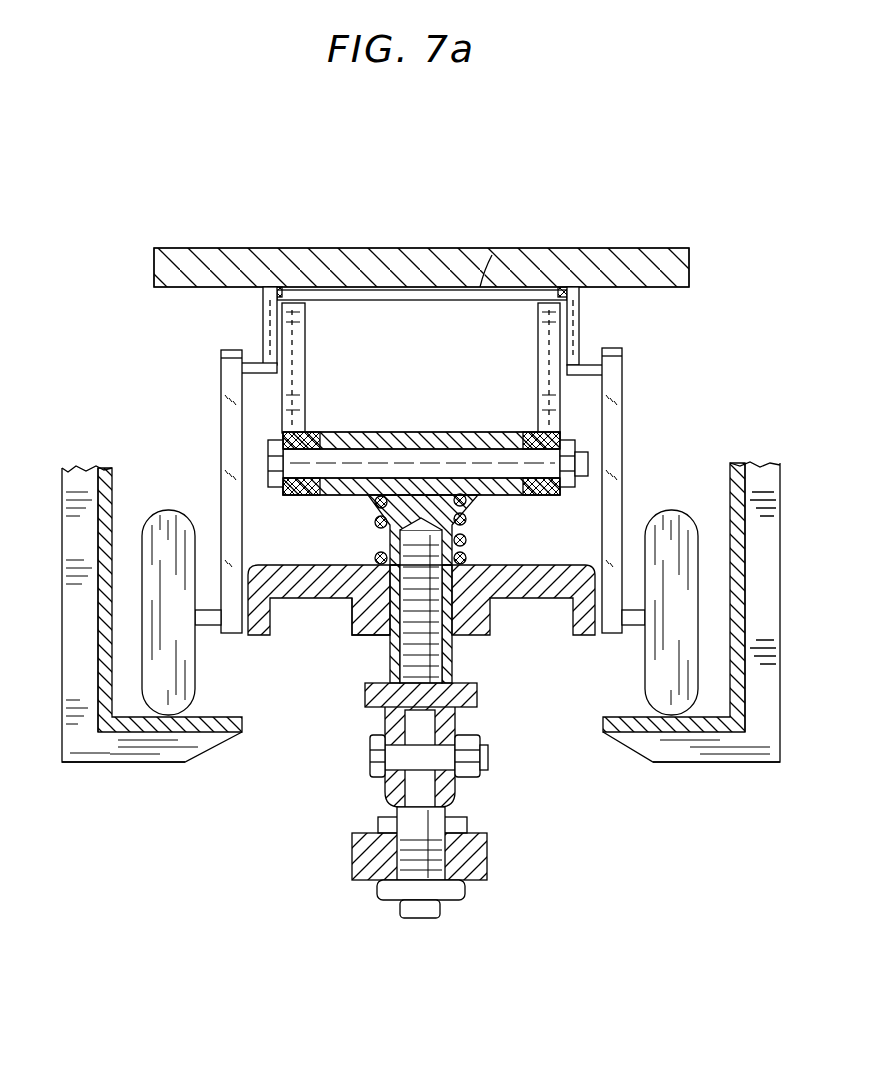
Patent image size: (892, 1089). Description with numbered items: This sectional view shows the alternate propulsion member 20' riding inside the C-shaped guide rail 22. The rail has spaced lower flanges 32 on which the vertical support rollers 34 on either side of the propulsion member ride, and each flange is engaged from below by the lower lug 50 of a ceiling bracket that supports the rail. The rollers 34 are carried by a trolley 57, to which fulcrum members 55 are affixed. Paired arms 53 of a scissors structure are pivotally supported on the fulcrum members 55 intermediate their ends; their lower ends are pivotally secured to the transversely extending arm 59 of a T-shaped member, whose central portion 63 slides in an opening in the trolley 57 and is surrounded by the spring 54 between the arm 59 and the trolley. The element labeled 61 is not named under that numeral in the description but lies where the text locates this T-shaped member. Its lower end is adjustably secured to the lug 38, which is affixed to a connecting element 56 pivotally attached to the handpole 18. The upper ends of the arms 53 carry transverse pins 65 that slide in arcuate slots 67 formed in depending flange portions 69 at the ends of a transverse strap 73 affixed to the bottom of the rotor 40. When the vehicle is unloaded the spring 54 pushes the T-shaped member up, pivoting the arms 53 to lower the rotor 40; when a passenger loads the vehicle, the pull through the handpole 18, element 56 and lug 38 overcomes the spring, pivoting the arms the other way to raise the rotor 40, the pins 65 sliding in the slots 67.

The propulsion member 20' is at (383, 243).
The rotor 40 is at (664, 262).
The transverse strap 73 is at (492, 262).
The depending flange portion 69 is at (578, 348).
The arcuate slot 67 is at (270, 352).
The transverse pin 65 is at (306, 314).
The fulcrum member 55 is at (224, 398).
The transversely extending arm 59 is at (452, 432).
The arm 53 is at (310, 432).
The spring 54 is at (467, 520).
The threaded stem 61 is at (456, 658).
The trolley 57 is at (302, 580).
The central portion 63 is at (395, 610).
The vertical support roller 34 is at (172, 508).
The guide rail 22 is at (105, 468).
The lower flange 32 is at (244, 735).
The lower lug 50 is at (134, 762).
The lug 38 is at (478, 698).
The connecting element 56 is at (468, 826).
The handpole 18 is at (488, 870).